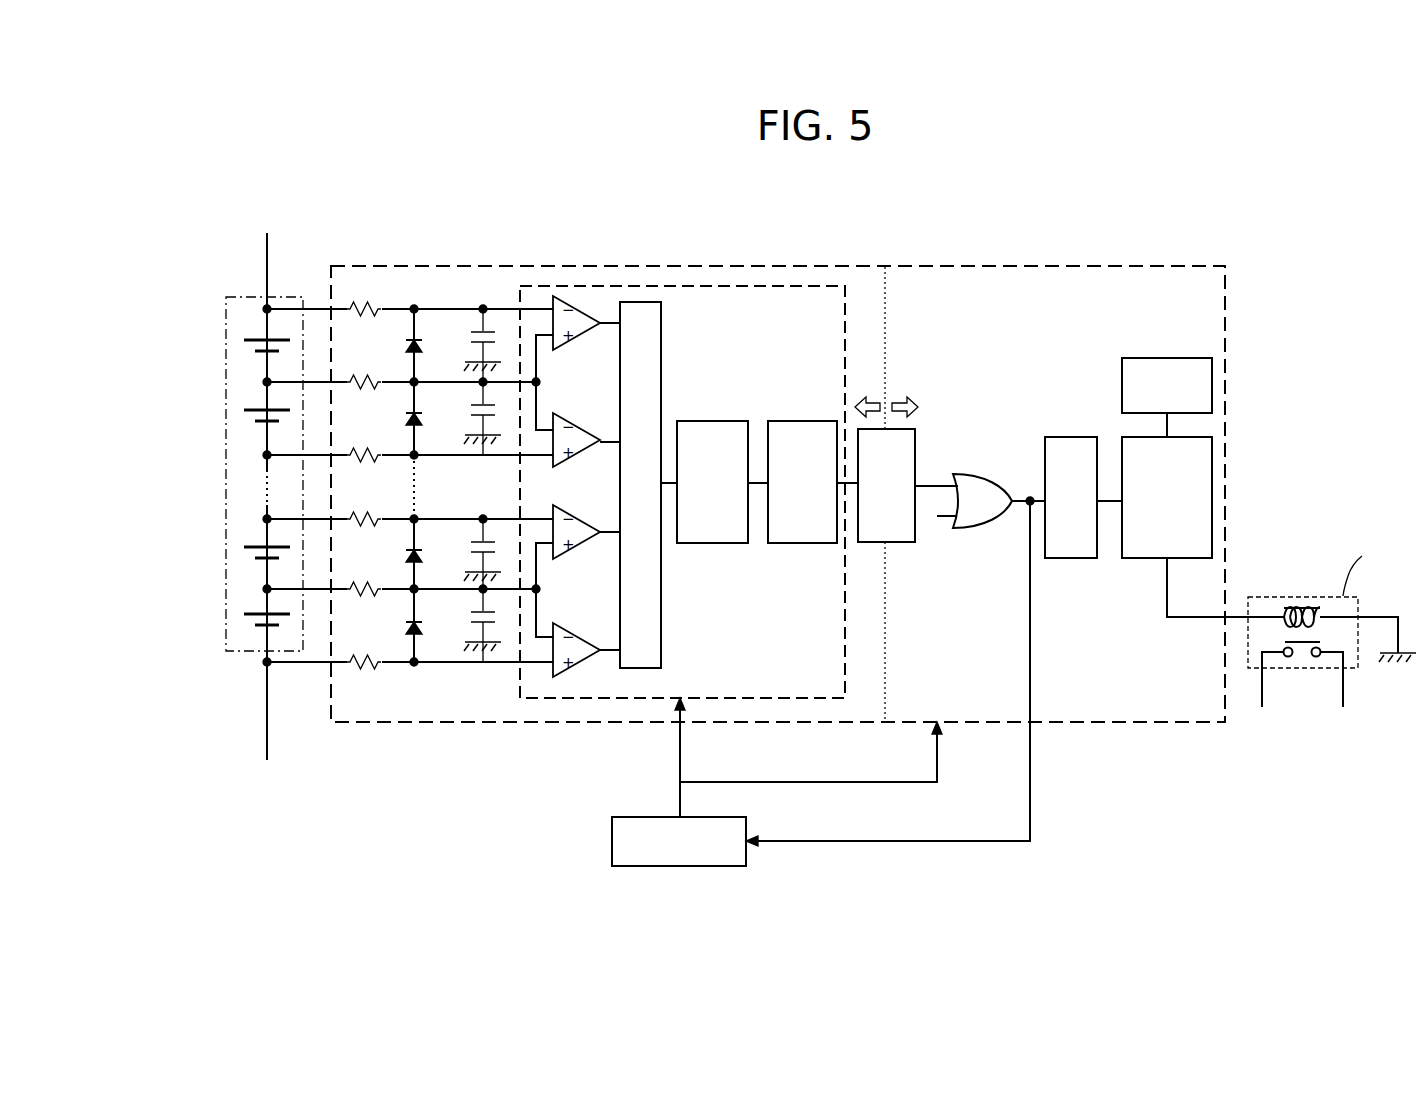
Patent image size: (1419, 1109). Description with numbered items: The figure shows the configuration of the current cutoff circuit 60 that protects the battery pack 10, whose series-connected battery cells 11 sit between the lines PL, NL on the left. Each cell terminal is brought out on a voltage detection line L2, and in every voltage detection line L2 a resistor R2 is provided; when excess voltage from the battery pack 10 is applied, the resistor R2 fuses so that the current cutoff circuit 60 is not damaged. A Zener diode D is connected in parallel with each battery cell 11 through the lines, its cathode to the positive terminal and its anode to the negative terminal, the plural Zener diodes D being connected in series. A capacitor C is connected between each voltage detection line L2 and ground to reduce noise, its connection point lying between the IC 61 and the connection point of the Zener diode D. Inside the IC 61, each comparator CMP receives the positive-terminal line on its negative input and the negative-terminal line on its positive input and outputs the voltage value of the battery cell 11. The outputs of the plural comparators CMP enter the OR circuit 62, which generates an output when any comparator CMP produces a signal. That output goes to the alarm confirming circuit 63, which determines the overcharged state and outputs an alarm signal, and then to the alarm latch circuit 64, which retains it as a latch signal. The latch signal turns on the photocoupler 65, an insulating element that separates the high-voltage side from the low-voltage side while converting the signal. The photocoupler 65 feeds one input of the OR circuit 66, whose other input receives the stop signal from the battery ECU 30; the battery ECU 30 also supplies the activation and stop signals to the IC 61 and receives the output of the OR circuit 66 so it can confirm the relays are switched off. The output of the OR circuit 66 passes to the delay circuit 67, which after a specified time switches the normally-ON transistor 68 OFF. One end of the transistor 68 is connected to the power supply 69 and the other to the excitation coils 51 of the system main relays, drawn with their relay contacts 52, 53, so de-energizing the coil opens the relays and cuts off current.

The battery pack 10 is at (226, 455).
The battery cell 11 is at (245, 348).
The battery ECU 30 is at (678, 866).
The excitation coil 51 is at (1297, 610).
The relay movable contact 52 is at (1322, 638).
The relay fixed contacts 53 is at (1290, 657).
The current cutoff circuit 60 is at (921, 266).
The IC 61 is at (689, 286).
The OR circuit 62 is at (661, 630).
The alarm confirming circuit 63 is at (712, 543).
The alarm latch circuit 64 is at (798, 543).
The photocoupler 65 is at (868, 542).
The OR circuit 66 is at (982, 528).
The delay circuit 67 is at (1068, 558).
The transistor 68 is at (1143, 558).
The power supply 69 is at (1122, 385).
The positive line PL is at (266, 246).
The negative line NL is at (267, 717).
The voltage detection line L2 is at (322, 661).
The resistor R2 is at (360, 656).
The Zener diode D is at (406, 628).
The capacitor C is at (468, 621).
The comparator CMP is at (586, 686).